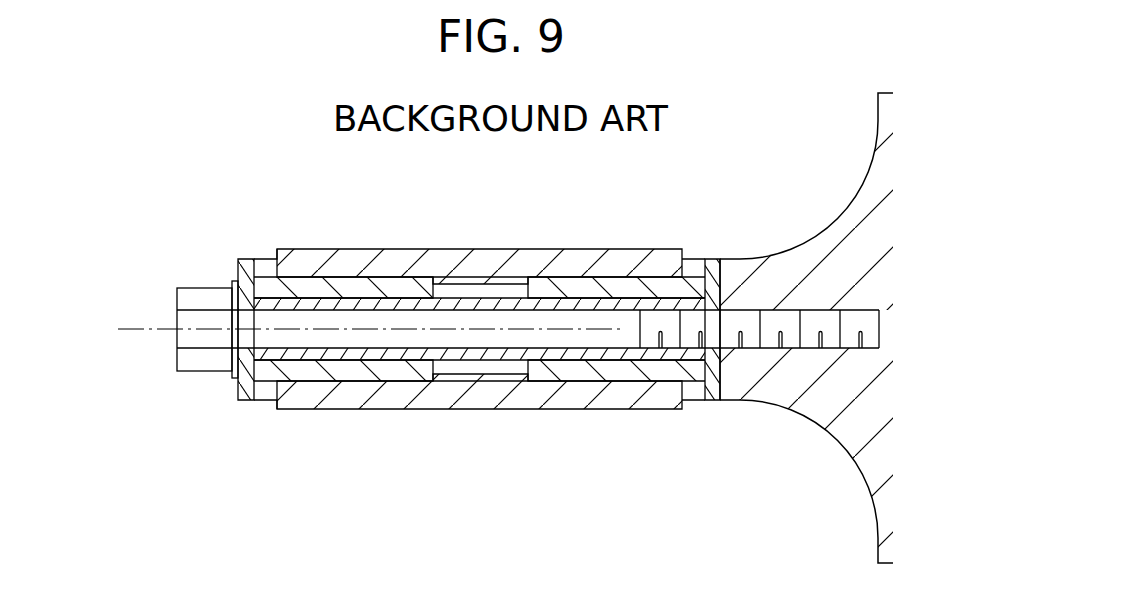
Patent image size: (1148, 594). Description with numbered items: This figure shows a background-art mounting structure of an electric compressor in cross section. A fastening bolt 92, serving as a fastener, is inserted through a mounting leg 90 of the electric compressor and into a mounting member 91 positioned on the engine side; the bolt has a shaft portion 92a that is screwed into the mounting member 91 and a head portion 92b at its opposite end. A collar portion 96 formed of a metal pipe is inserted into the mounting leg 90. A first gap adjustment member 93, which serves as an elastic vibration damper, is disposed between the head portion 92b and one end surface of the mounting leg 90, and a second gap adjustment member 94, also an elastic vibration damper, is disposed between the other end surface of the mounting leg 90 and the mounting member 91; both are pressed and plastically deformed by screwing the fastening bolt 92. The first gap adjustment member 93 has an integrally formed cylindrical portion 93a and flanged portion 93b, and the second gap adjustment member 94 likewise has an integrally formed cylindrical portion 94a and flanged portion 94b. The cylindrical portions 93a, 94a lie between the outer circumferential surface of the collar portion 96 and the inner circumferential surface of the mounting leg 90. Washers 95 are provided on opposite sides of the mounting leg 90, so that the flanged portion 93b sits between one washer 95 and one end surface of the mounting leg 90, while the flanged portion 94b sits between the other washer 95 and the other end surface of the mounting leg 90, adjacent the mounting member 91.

The mounting leg 90 is at (484, 409).
The mounting member 91 is at (730, 401).
The fastening bolt 92 is at (506, 363).
The shaft portion 92a is at (596, 338).
The head portion 92b is at (177, 343).
The first gap adjustment member 93 is at (333, 364).
The cylindrical portion 93a is at (342, 373).
The flanged portion 93b is at (269, 402).
The second gap adjustment member 94 is at (616, 370).
The cylindrical portion 94a is at (567, 374).
The flanged portion 94b is at (700, 401).
The washers 95 is at (243, 402).
The collar portion 96 is at (446, 364).